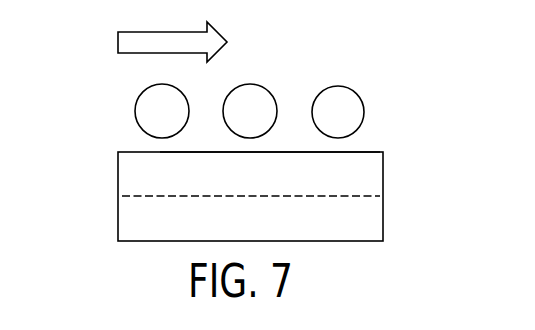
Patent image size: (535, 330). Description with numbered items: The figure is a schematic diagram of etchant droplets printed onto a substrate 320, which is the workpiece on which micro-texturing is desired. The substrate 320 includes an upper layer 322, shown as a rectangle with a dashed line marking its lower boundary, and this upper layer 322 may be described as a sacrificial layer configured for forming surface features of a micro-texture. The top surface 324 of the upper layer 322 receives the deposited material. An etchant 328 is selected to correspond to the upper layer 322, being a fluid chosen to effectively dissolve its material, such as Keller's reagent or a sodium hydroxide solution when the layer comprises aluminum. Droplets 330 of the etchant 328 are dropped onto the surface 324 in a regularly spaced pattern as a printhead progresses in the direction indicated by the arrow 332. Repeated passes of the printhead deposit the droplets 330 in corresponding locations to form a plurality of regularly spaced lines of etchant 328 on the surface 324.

The substrate 320 is at (75, 200).
The upper layer 322 is at (125, 180).
The top surface 324 is at (290, 133).
The etchant 328 is at (351, 115).
The droplets 330 is at (135, 115).
The arrow 332 is at (118, 42).